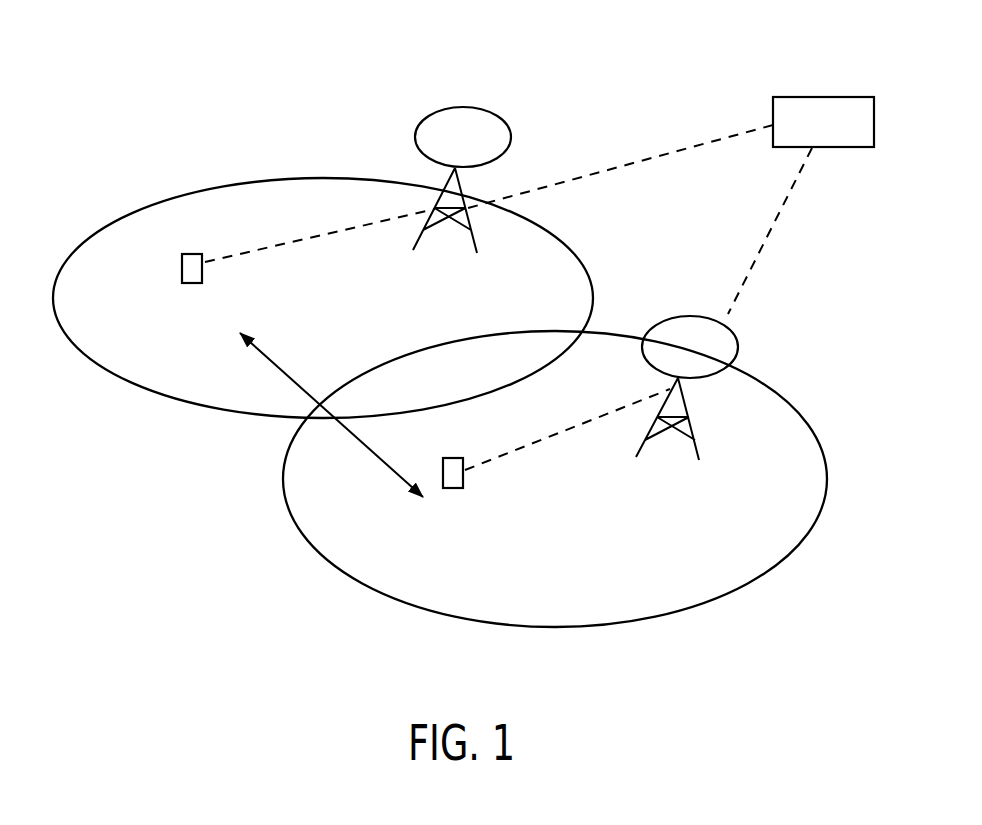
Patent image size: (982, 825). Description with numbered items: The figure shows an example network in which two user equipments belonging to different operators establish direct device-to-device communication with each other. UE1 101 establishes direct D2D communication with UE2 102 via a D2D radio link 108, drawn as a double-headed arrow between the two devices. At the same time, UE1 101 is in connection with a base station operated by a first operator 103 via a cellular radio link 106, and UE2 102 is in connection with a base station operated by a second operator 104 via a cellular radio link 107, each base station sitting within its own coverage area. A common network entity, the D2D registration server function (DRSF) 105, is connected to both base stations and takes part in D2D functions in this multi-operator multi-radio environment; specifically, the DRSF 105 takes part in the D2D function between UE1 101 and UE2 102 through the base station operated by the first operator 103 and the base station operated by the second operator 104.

The UE1 101 is at (190, 243).
The UE2 102 is at (465, 452).
The base station operated by a first operator 103 is at (485, 92).
The base station operated by a second operator 104 is at (699, 300).
The D2D registration server function (DRSF) 105 is at (833, 88).
The cellular radio link 106 is at (337, 246).
The cellular radio link 107 is at (590, 449).
The D2D radio link 108 is at (302, 376).